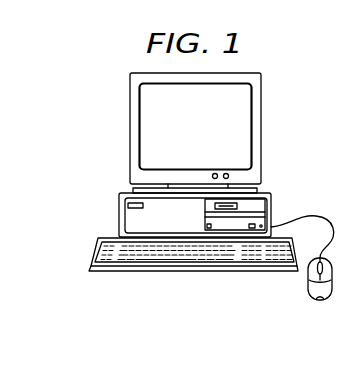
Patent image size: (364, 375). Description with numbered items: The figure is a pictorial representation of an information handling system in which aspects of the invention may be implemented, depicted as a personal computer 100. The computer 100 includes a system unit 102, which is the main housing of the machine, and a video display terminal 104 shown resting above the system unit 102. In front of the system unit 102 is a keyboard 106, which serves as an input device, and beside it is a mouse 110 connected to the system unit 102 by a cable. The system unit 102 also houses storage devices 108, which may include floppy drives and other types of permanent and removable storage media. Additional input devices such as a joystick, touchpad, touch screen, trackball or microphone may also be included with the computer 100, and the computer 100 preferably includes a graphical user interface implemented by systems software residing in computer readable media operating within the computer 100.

The computer 100 is at (76, 123).
The system unit 102 is at (119, 212).
The video display terminal 104 is at (262, 131).
The keyboard 106 is at (110, 273).
The storage devices 108 is at (271, 208).
The mouse 110 is at (320, 300).